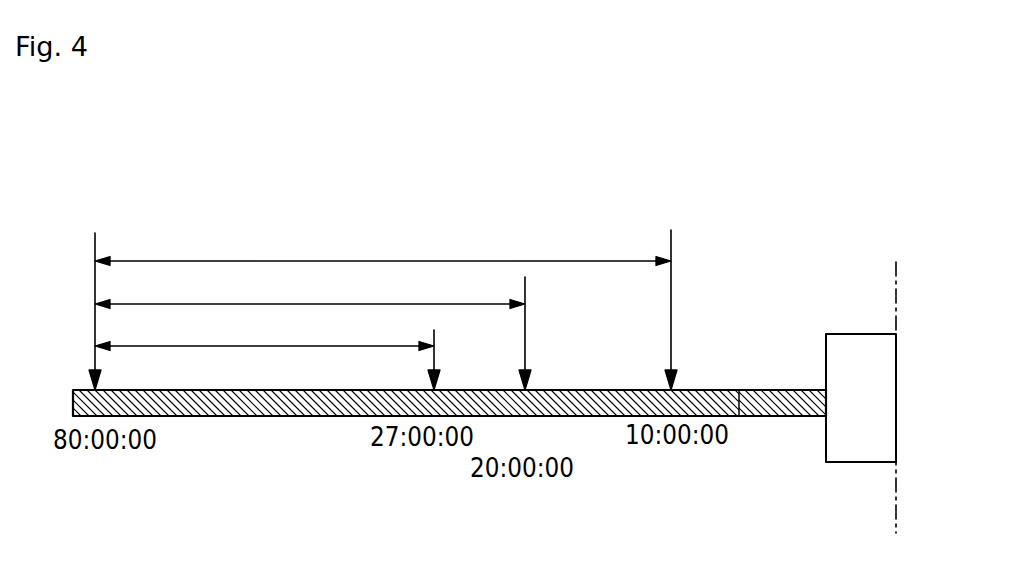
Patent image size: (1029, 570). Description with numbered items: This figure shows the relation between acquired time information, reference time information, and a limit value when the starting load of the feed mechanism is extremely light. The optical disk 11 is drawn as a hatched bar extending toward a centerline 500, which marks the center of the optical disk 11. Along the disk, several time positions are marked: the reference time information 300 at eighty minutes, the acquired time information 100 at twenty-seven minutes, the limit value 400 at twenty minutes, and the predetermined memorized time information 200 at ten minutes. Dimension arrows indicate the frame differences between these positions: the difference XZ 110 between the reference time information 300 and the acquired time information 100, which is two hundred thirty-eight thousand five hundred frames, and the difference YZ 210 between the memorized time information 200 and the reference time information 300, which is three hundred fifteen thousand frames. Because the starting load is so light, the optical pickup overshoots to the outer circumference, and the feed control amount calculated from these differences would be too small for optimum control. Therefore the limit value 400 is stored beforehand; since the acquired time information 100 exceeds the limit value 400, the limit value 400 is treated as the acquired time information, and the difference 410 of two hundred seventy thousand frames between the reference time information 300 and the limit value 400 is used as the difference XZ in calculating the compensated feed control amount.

The optical disk 11 is at (300, 413).
The acquired time information 100 is at (436, 358).
The difference XZ 110 is at (207, 346).
The predetermined memorized time information 200 is at (672, 245).
The difference YZ 210 is at (401, 261).
The reference time information 300 is at (97, 246).
The limit value 400 is at (527, 341).
The difference 410 is at (320, 304).
The centerline 500 is at (895, 275).